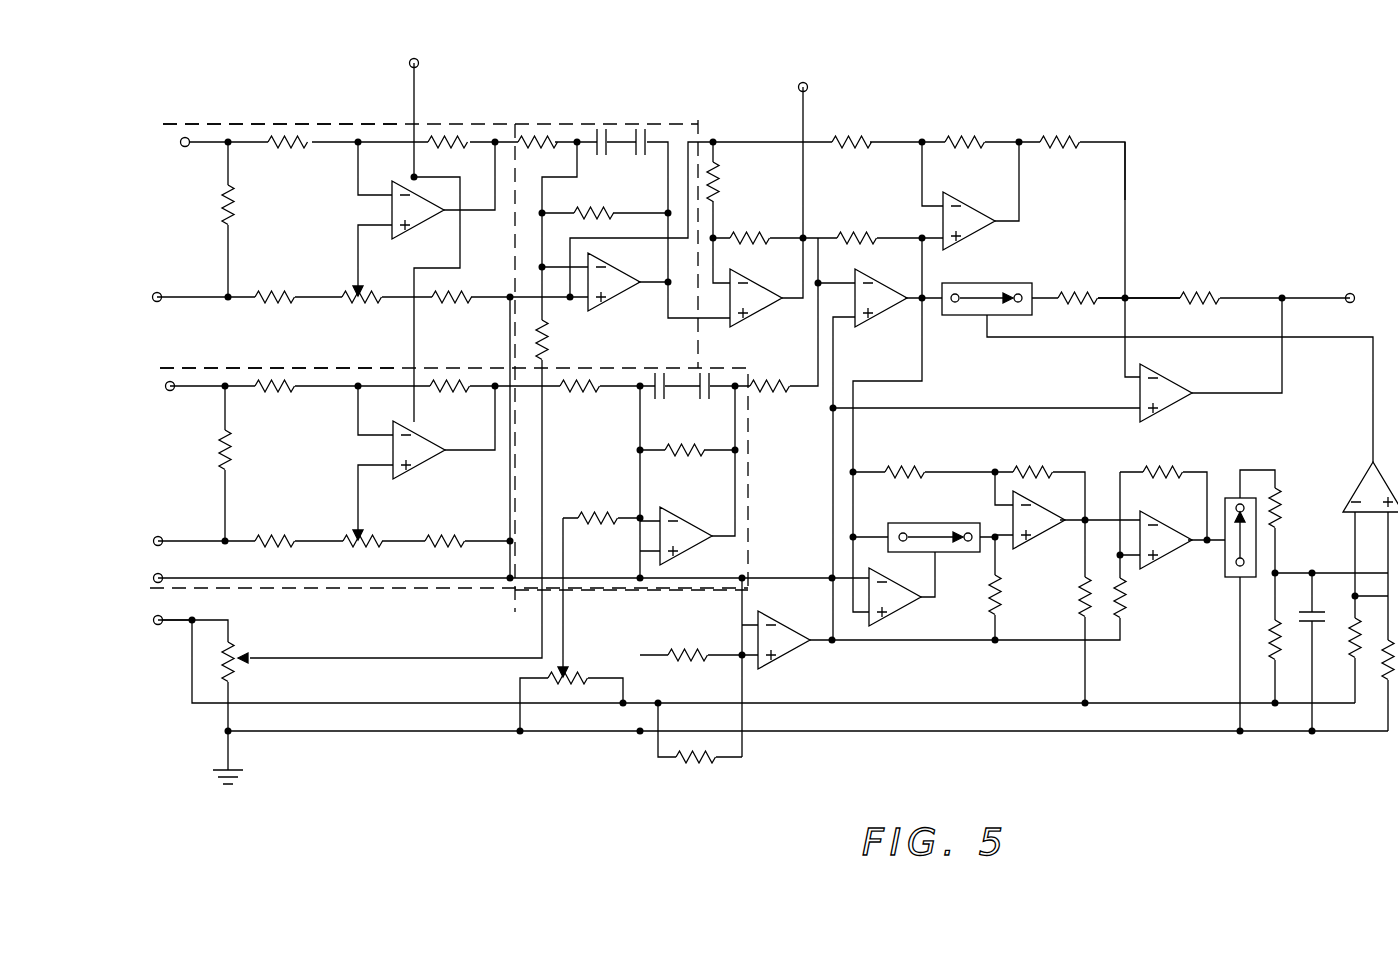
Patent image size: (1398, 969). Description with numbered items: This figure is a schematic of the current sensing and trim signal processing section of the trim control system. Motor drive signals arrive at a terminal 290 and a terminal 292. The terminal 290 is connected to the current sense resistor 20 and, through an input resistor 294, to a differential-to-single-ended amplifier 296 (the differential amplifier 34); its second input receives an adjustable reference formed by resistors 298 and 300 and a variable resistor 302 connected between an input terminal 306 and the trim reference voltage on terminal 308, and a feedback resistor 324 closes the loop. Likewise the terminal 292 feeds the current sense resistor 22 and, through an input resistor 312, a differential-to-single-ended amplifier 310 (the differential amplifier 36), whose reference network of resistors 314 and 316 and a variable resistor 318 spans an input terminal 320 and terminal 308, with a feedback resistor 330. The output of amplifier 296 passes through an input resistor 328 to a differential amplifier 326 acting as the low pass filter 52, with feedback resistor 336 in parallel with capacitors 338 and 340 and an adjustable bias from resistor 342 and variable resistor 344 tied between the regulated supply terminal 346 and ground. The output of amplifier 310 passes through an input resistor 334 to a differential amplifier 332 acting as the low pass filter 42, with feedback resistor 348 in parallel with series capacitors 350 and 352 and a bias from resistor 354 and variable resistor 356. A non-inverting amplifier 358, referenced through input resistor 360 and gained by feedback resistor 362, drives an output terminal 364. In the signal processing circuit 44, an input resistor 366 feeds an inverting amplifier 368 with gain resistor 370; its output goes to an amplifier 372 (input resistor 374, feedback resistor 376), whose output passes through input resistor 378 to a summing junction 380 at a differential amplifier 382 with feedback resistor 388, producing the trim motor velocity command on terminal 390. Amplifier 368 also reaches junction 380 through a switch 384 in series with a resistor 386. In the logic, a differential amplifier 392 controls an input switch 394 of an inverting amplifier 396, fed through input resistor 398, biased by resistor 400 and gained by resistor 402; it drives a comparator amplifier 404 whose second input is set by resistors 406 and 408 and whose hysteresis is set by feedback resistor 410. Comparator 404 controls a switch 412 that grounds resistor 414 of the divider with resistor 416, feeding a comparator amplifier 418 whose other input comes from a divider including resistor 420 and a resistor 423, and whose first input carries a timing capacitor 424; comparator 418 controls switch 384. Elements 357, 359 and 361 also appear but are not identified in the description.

The current sense resistor 20 is at (225, 203).
The current sense resistor 22 is at (225, 435).
The differential amplifier 34 is at (323, 189).
The differential amplifier 36 is at (311, 444).
The low pass filter 42 is at (600, 459).
The signal processing circuit 44 is at (1083, 199).
The low pass filter 52 is at (650, 267).
The terminal 290 is at (183, 138).
The terminal 292 is at (175, 385).
The input resistor 294 is at (282, 138).
The differential-to-single-ended amplifier 296 is at (392, 207).
The resistor 298 is at (290, 295).
The resistor 300 is at (478, 303).
The variable resistor 302 is at (366, 303).
The input terminal 306 is at (157, 296).
The terminal 308 is at (160, 578).
The differential-to-single-ended amplifier 310 is at (415, 470).
The input resistor 312 is at (279, 384).
The resistor 314 is at (285, 539).
The resistor 316 is at (435, 527).
The variable resistor 318 is at (348, 536).
The input terminal 320 is at (158, 540).
The feedback resistor 324 is at (462, 138).
The differential amplifier 326 is at (627, 300).
The input resistor 328 is at (545, 140).
The resistor 330 is at (469, 390).
The differential amplifier 332 is at (695, 522).
The input resistor 334 is at (595, 390).
The resistor 336 is at (580, 213).
The capacitor 338 is at (652, 138).
The capacitor 340 is at (588, 128).
The resistor 342 is at (548, 345).
The variable resistor 344 is at (240, 645).
The terminal 346 is at (161, 619).
The resistor 348 is at (698, 432).
The capacitor 350 is at (724, 380).
The capacitor 352 is at (680, 358).
The resistor 354 is at (593, 516).
The variable resistor 356 is at (620, 640).
The resistor 357 is at (687, 651).
The non-inverting amplifier 358 is at (780, 308).
The resistor 359 is at (695, 763).
The input resistor 360 is at (740, 180).
The operational amplifier 361 is at (785, 660).
The feedback resistor 362 is at (767, 237).
The terminal 364 is at (808, 88).
The input resistor 366 is at (790, 390).
The inverting amplifier 368 is at (885, 311).
The resistor 370 is at (865, 236).
The amplifier 372 is at (990, 182).
The input resistor 374 is at (857, 125).
The feedback resistor 376 is at (970, 140).
The input resistor 378 is at (1070, 140).
The summing junction 380 is at (1125, 296).
The differential amplifier 382 is at (1165, 400).
The switch 384 is at (965, 316).
The resistor 386 is at (1057, 296).
The feedback resistor 388 is at (1205, 293).
The terminal 390 is at (1348, 293).
The differential amplifier 392 is at (890, 600).
The input switch 394 is at (915, 524).
The inverting amplifier 396 is at (1060, 557).
The input resistor 398 is at (915, 472).
The bias resistor 400 is at (995, 605).
The gain resistor 402 is at (1025, 472).
The comparator amplifier 404 is at (1150, 537).
The resistor 406 is at (1085, 600).
The resistor 408 is at (1120, 598).
The feedback resistor 410 is at (1155, 470).
The switch 412 is at (1225, 532).
The resistor 414 is at (1283, 526).
The resistor 416 is at (1275, 627).
The comparator amplifier 418 is at (1358, 480).
The resistor 420 is at (1355, 660).
The resistor 423 is at (1388, 673).
The timing capacitor 424 is at (1320, 603).